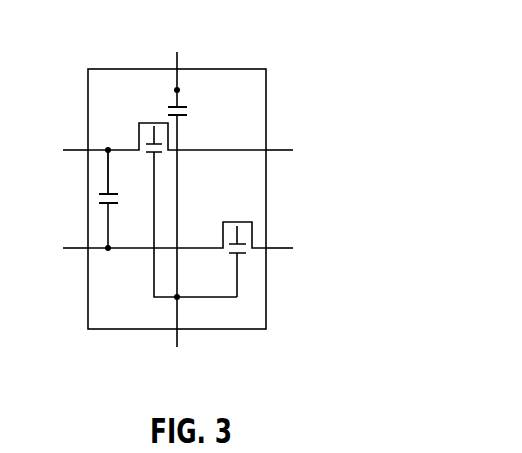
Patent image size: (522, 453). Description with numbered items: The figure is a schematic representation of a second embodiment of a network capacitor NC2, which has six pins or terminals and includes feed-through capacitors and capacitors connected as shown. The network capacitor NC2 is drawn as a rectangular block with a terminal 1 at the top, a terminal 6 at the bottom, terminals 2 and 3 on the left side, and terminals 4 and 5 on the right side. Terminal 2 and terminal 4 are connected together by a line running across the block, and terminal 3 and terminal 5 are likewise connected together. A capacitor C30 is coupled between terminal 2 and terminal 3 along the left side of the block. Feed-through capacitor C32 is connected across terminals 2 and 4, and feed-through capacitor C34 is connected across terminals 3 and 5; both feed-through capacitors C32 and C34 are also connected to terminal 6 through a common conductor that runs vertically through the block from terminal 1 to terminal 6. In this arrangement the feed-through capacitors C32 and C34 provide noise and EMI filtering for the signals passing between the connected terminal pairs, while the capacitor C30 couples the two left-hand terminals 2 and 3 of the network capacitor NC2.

The network capacitor NC2 is at (273, 60).
The terminal 1 is at (177, 46).
The terminal 2 is at (67, 153).
The terminal 3 is at (67, 251).
The terminal 4 is at (287, 153).
The terminal 5 is at (287, 251).
The terminal 6 is at (177, 353).
The feed-through capacitor C34 is at (200, 189).
The feed-through capacitor C32 is at (126, 176).
The capacitor C30 is at (130, 225).